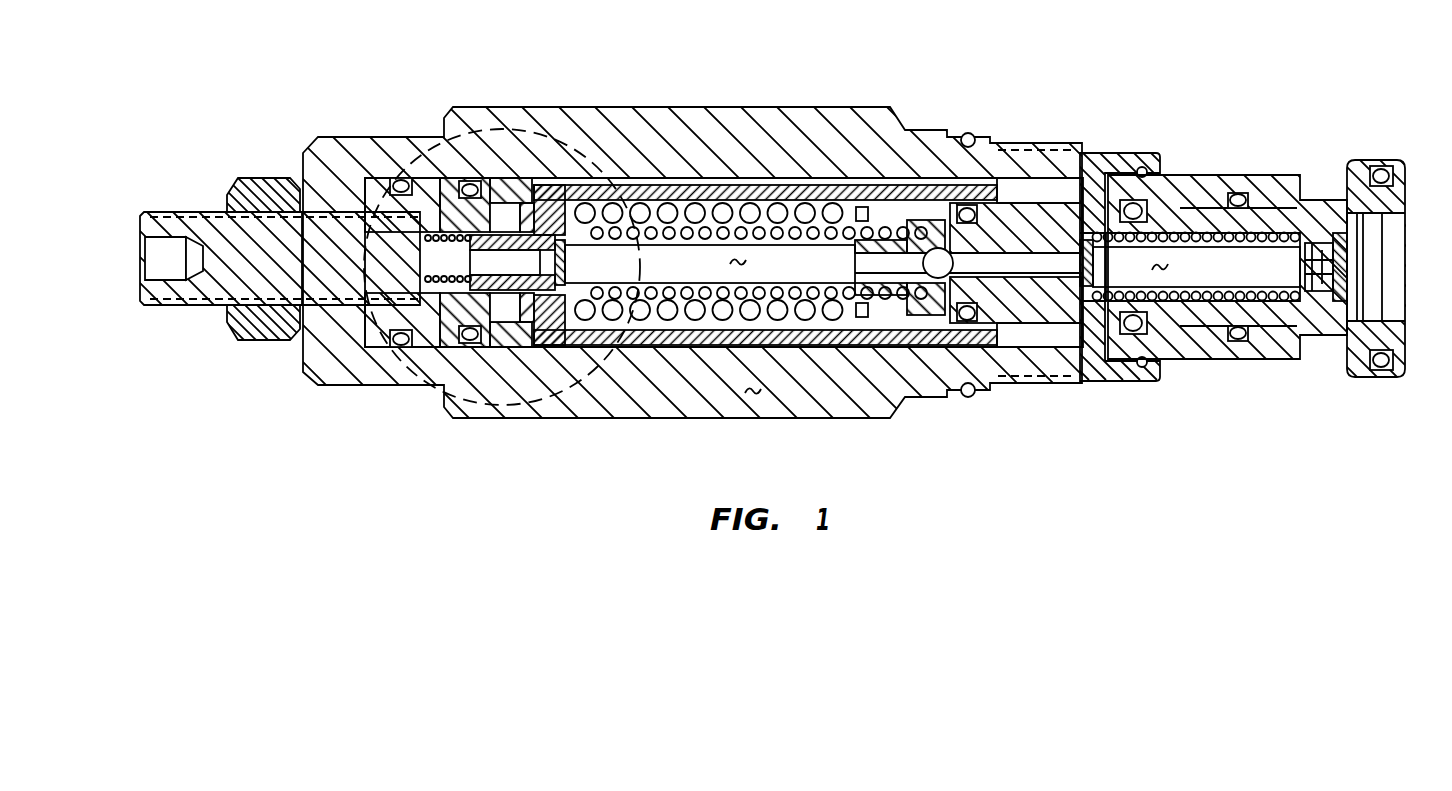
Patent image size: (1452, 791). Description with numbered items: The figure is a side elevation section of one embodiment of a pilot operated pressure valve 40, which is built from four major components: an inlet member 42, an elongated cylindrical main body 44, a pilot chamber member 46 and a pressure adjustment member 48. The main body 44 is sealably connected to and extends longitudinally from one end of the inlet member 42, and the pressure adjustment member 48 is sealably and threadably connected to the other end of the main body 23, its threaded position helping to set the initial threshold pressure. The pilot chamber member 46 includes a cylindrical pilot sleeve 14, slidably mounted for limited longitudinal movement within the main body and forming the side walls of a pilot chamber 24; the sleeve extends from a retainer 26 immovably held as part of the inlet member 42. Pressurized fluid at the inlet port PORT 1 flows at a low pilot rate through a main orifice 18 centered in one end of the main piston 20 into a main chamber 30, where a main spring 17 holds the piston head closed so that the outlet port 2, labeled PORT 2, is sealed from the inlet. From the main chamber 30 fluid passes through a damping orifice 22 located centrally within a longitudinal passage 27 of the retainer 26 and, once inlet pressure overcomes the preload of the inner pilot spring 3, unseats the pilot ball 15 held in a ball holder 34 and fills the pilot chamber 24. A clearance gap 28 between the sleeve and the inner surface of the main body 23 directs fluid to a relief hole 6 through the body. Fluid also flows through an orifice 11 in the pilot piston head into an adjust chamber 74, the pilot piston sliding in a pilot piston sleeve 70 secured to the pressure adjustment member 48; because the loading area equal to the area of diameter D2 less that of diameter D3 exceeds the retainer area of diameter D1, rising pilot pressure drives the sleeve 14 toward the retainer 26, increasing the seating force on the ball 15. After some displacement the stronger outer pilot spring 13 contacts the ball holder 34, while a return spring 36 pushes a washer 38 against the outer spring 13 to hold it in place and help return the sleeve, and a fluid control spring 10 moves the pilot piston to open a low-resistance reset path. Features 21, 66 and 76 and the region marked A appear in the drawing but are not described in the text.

The outlet port 2 is at (498, 140).
The inner pilot spring 3 is at (820, 210).
The relief hole 6 is at (1090, 160).
The fluid control spring 10 is at (443, 183).
The orifice 11 is at (543, 350).
The outer pilot spring 13 is at (683, 210).
The pilot sleeve 14 is at (541, 188).
The pilot ball 15 is at (930, 248).
The main spring 17 is at (1190, 325).
The main orifice 18 is at (1315, 300).
The main piston 20 is at (1322, 310).
The port body 21 is at (1188, 175).
The damping orifice 22 is at (1086, 300).
The main body 23 is at (757, 398).
The pilot chamber 24 is at (750, 125).
The retainer 26 is at (1046, 325).
The longitudinal passage 27 is at (1044, 290).
The clearance gap 28 is at (690, 345).
The main chamber 30 is at (1163, 275).
The ball holder 34 is at (928, 300).
The return spring 36 is at (900, 300).
The washer 38 is at (864, 345).
The pilot operated pressure valve 40 is at (877, 97).
The inlet member 42 is at (1355, 157).
The elongated cylindrical main body 44 is at (702, 107).
The pilot chamber member 46 is at (626, 205).
The pressure adjustment member 48 is at (208, 307).
The push rod 66 is at (593, 345).
The pilot piston sleeve 70 is at (467, 350).
The adjust chamber 74 is at (430, 335).
The guide 76 is at (523, 350).
The detail circle A is at (485, 132).
The diameter D1 is at (1020, 120).
The diameter D2 is at (340, 123).
The diameter D3 is at (276, 195).
The inlet port PORT1 is at (1398, 300).
The outlet port PORT2 is at (1316, 185).